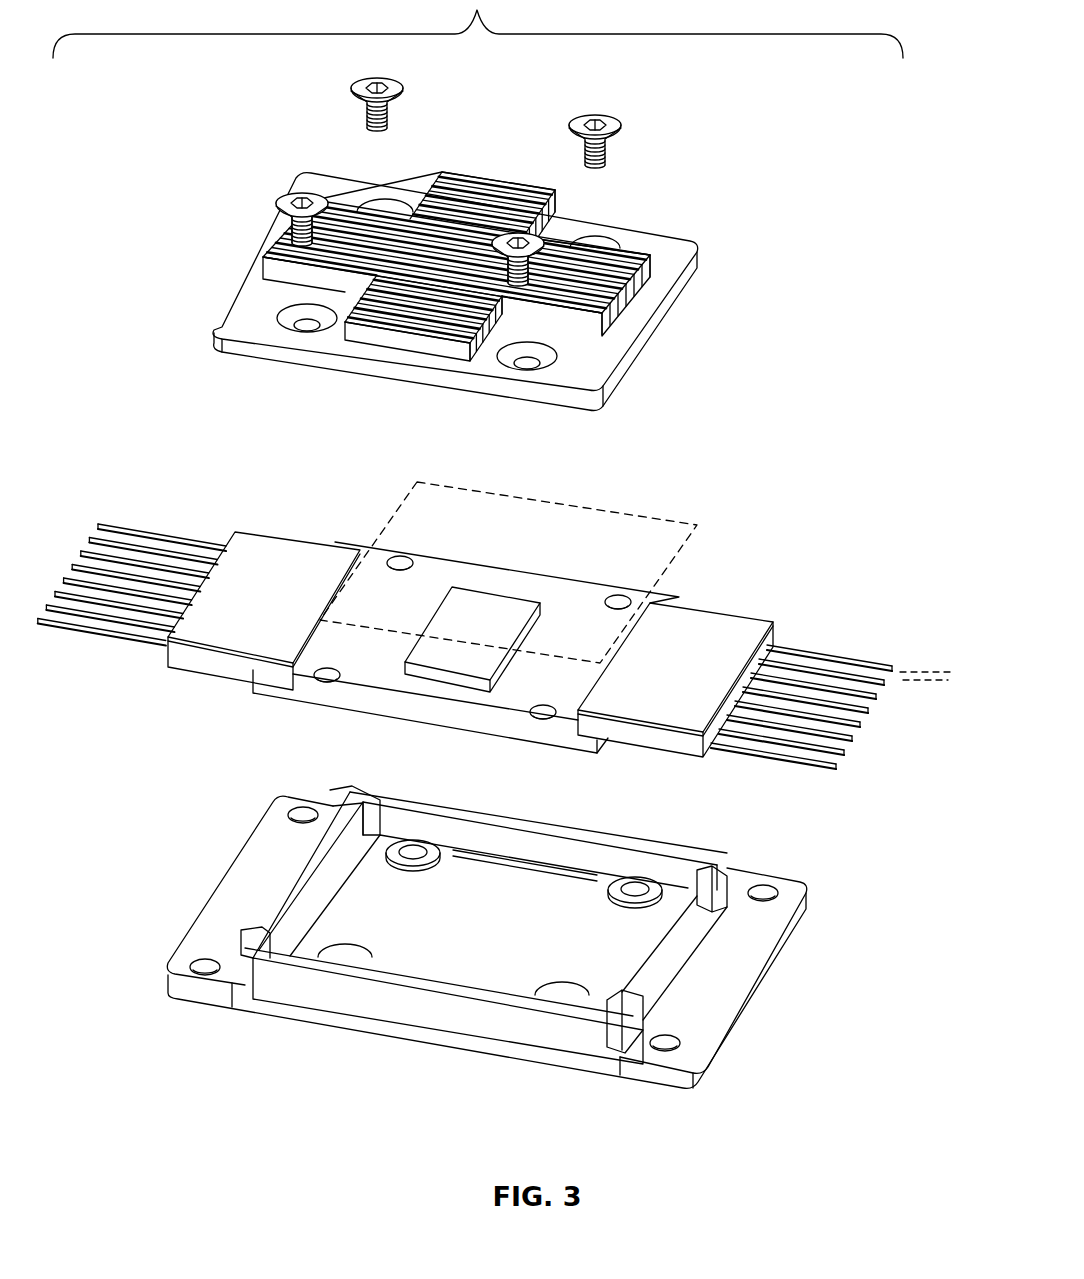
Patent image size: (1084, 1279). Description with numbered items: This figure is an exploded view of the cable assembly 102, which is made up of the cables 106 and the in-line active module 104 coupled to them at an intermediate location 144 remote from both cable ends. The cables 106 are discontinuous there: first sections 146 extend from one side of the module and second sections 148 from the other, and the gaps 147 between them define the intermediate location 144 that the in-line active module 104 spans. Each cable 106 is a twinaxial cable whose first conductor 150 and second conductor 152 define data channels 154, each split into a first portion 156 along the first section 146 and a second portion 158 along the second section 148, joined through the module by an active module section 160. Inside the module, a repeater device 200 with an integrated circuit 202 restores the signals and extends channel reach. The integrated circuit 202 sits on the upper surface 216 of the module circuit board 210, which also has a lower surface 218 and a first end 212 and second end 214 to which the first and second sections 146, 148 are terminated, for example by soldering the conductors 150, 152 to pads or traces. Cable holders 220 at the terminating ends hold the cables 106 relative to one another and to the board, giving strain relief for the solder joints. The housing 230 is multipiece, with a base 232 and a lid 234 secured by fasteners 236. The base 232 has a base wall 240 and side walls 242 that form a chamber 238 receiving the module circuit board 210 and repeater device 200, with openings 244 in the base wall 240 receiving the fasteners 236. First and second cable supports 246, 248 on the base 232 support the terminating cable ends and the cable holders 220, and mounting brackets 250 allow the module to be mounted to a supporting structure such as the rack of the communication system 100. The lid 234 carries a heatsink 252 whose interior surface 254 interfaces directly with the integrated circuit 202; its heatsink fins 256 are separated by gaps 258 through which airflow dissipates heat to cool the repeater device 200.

The communication system 100 is at (250, 110).
The cable assembly 102 is at (904, 620).
The in-line active module 104 is at (742, 105).
The cables 106 is at (484, 622).
The intermediate location 144 is at (417, 482).
The first sections 146 is at (121, 509).
The gaps 147 is at (600, 513).
The second sections 148 is at (853, 637).
The first conductor 150 is at (932, 682).
The second conductor 152 is at (905, 677).
The data channels 154 is at (165, 542).
The first portion 156 is at (211, 529).
The second portion 158 is at (828, 637).
The active module section 160 is at (393, 627).
The repeater device 200 is at (472, 612).
The integrated circuit 202 is at (487, 653).
The module circuit board 210 is at (576, 603).
The first end 212 is at (335, 553).
The second end 214 is at (700, 604).
The upper surface 216 is at (383, 660).
The lower surface 218 is at (380, 717).
The cable holders 220 is at (759, 605).
The housing 230 is at (519, 1070).
The base 232 is at (335, 1017).
The lid 234 is at (673, 246).
The fasteners 236 is at (604, 114).
The chamber 238 is at (563, 896).
The base wall 240 is at (447, 945).
The side walls 242 is at (487, 1005).
The openings 244 is at (635, 892).
The first cable support 246 is at (247, 905).
The second cable support 248 is at (743, 947).
The mounting brackets 250 is at (690, 1047).
The heatsink 252 is at (456, 202).
The interior surface 254 is at (395, 390).
The heatsink fins 256 is at (600, 252).
The gaps 258 is at (625, 254).